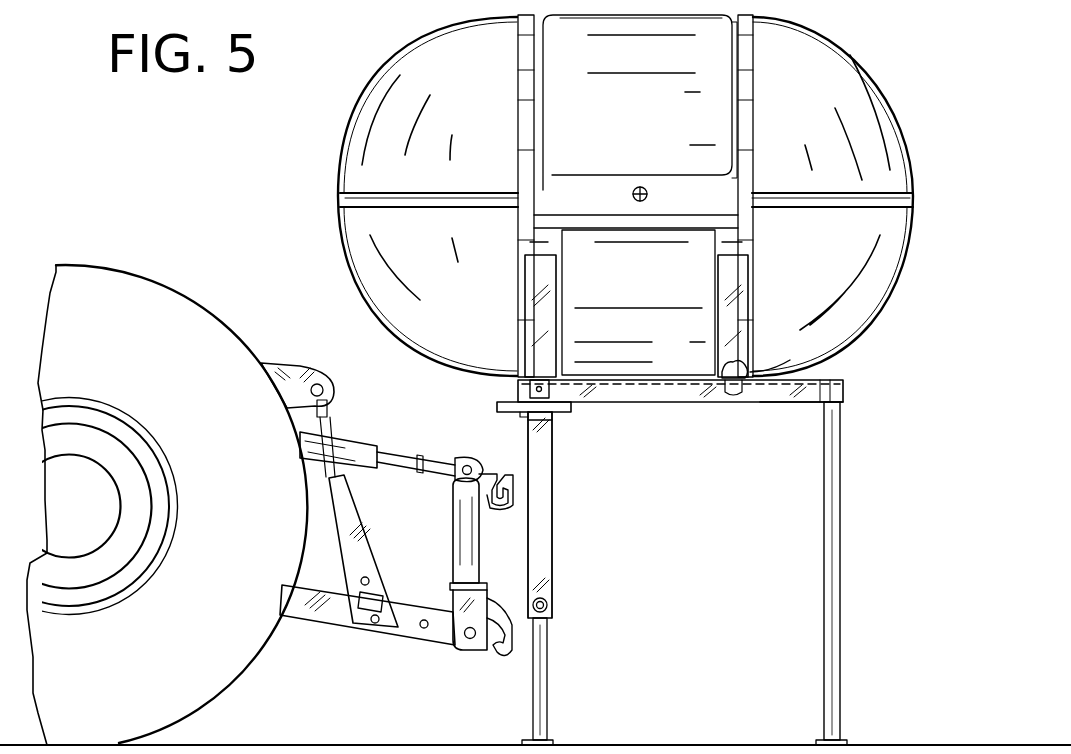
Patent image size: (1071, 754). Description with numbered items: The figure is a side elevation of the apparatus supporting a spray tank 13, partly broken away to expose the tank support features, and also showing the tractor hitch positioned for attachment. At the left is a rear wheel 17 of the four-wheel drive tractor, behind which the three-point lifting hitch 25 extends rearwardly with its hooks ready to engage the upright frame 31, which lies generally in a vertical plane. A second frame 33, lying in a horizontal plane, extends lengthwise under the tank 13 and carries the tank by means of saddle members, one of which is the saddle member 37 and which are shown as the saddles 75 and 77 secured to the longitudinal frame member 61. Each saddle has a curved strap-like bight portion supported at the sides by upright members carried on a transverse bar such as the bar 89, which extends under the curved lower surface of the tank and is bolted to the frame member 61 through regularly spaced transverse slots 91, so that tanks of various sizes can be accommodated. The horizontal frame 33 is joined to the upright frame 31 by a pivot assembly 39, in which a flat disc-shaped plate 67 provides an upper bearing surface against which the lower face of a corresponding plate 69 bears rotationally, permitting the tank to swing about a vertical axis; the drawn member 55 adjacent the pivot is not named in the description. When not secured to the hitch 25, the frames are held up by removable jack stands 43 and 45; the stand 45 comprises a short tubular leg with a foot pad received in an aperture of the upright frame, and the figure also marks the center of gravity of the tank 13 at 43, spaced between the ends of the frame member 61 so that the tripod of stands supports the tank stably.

The spray tank 13 is at (833, 45).
The rear wheel 17 is at (205, 302).
The three-point lifting hitch 25 is at (413, 655).
The upright frame 31 is at (555, 465).
The second frame 33 is at (708, 403).
The tank support saddle member 37 is at (507, 463).
The pivot assembly 39 is at (495, 406).
The jack stand 43 is at (842, 592).
The jack stand 45 is at (552, 686).
The post sleeve 55 is at (553, 548).
The longitudinal frame member 61 is at (640, 404).
The disc-shaped plate 67 is at (572, 410).
The disc-shaped plate 69 is at (518, 392).
The saddle 75 is at (521, 304).
The saddle 77 is at (758, 290).
The transverse bar 89 is at (718, 366).
The transverse slot 91 is at (760, 345).